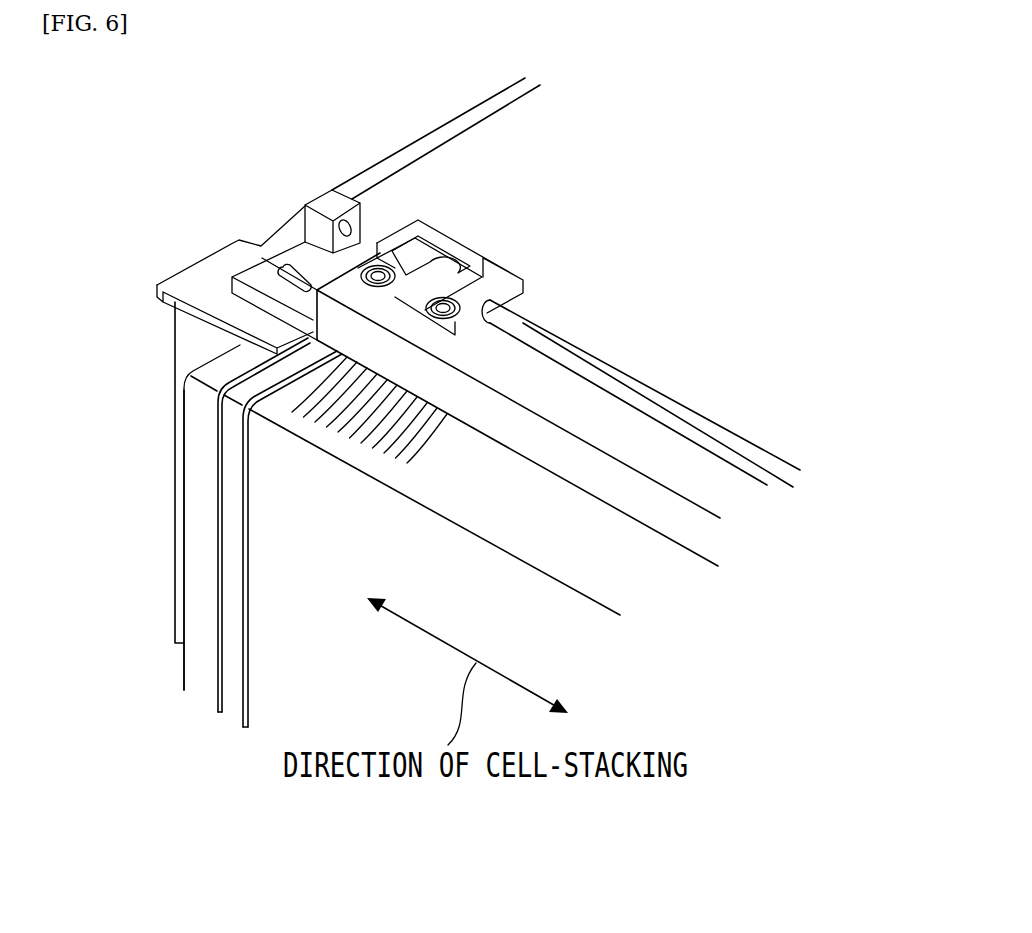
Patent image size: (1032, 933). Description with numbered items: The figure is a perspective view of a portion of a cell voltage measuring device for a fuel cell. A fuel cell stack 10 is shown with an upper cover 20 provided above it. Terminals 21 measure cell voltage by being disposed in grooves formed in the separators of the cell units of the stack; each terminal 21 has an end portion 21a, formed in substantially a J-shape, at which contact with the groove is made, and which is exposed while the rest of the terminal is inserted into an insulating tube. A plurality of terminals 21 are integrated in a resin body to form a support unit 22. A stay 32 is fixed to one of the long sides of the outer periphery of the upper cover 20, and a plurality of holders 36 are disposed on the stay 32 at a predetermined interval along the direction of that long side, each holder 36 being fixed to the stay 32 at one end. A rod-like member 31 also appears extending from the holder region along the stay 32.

The fuel cell stack 10 is at (266, 570).
The upper cover 20 is at (429, 170).
The terminal 21 is at (440, 452).
The end portion 21a is at (396, 465).
The support unit 22 is at (497, 275).
The rod 31 is at (627, 377).
The stay 32 is at (722, 487).
The holder 36 is at (436, 272).